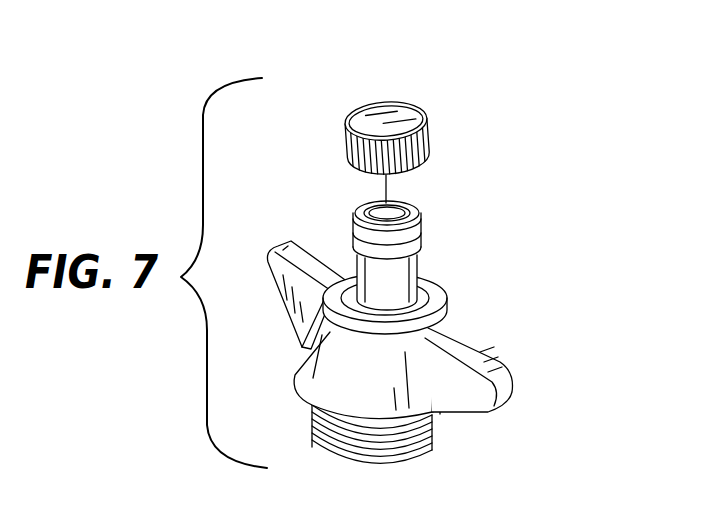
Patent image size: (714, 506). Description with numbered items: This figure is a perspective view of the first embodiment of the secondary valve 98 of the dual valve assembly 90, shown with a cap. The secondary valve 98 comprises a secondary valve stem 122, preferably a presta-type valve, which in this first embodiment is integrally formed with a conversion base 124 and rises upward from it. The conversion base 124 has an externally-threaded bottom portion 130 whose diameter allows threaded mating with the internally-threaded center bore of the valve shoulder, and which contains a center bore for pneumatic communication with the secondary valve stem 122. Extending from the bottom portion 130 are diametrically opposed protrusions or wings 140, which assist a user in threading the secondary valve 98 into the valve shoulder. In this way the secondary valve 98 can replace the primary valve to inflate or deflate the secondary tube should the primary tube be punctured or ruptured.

The dual valve assembly 90 is at (444, 76).
The secondary valve 98 is at (418, 214).
The secondary valve stem 122 is at (397, 285).
The conversion base 124 is at (446, 308).
The wings 140 is at (470, 345).
The externally-threaded bottom portion 130 is at (435, 440).